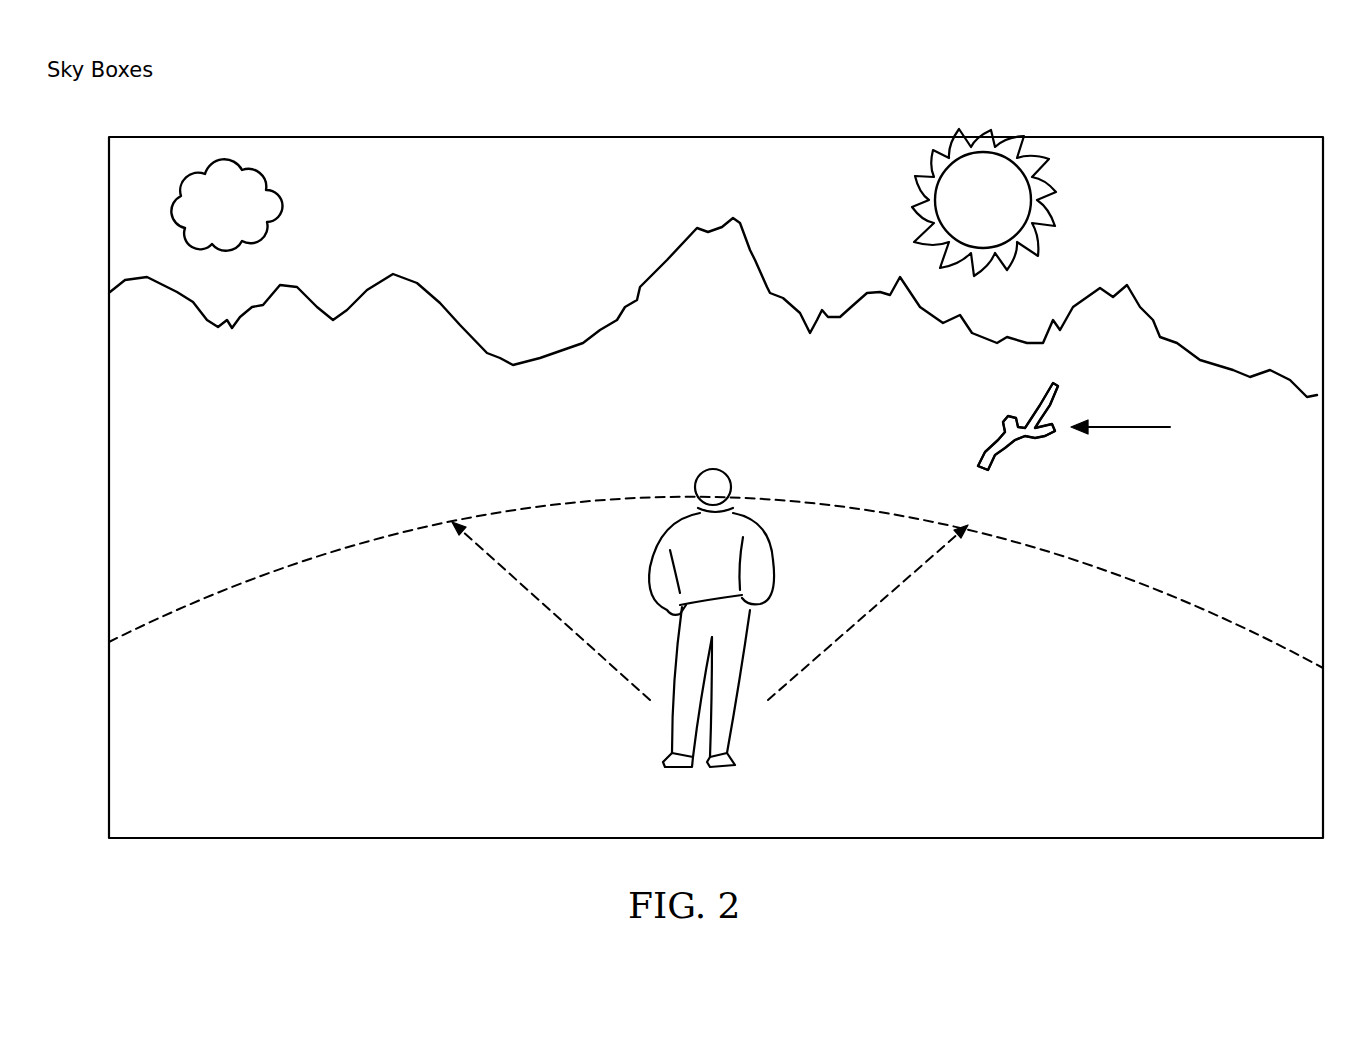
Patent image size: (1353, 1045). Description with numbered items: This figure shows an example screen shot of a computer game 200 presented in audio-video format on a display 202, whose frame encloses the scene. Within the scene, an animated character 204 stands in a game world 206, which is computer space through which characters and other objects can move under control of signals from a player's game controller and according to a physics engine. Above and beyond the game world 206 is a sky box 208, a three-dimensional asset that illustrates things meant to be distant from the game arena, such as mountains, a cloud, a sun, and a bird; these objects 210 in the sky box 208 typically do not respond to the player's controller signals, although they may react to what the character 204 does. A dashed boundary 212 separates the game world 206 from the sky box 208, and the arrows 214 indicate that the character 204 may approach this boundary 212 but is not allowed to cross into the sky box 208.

The computer game 200 is at (892, 114).
The display 202 is at (716, 136).
The animated character 204 is at (648, 573).
The game world 206 is at (283, 782).
The sky box 208 is at (491, 182).
The objects 210 is at (1000, 436).
The boundary 212 is at (1223, 617).
The arrows 214 is at (877, 619).